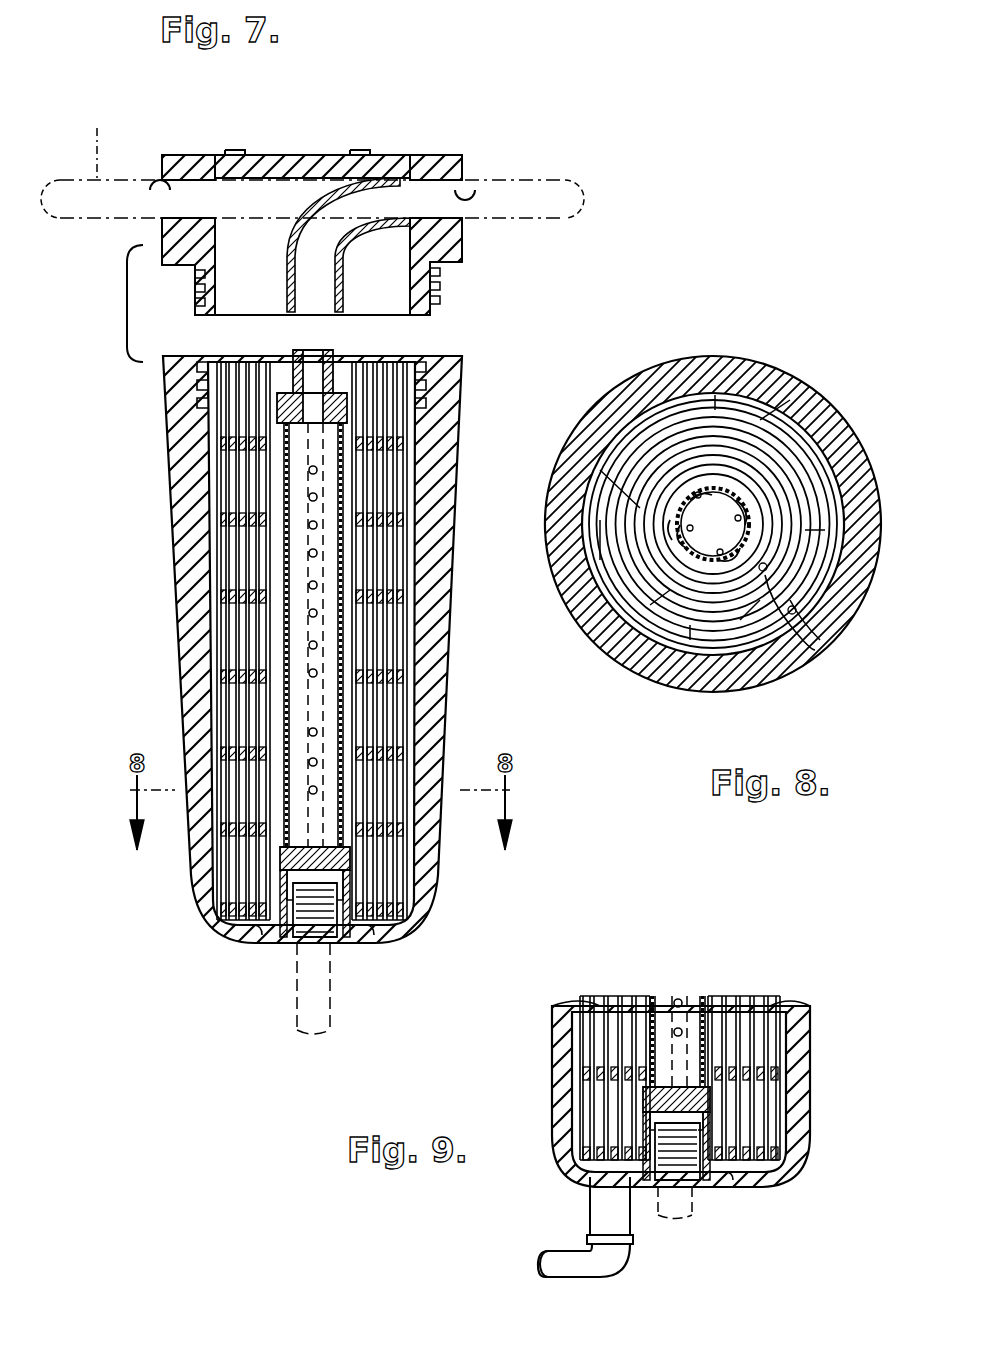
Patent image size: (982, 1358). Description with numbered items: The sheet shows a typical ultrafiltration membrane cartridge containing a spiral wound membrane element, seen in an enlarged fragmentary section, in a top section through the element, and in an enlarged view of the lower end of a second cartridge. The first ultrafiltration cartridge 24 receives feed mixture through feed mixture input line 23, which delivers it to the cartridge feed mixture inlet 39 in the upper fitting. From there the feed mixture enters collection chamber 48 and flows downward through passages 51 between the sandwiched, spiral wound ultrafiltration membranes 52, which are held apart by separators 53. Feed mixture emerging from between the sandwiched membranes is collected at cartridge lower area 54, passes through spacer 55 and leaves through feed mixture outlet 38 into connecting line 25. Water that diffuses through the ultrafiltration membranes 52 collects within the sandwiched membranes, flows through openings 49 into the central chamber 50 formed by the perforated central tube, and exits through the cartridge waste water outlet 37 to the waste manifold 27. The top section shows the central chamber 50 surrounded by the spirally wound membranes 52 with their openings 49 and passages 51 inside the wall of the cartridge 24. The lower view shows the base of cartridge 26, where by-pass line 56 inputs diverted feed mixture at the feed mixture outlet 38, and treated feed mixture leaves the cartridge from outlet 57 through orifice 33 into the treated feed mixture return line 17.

In FIG. 9, the treated feed mixture return line 17 is at (565, 1250).
In FIG. 7, the feed mixture input line 23 is at (106, 235).
In FIG. 7, the first ultrafiltration cartridge 24 is at (180, 598).
In FIG. 8, the first ultrafiltration cartridge 24 is at (735, 356).
In FIG. 7, the connecting line 25 is at (330, 1000).
In FIG. 9, the cartridge 26 is at (552, 1050).
In FIG. 7, the waste manifold 27 is at (540, 180).
In FIG. 9, the orifice 33 is at (585, 1212).
In FIG. 7, the cartridge waste water outlet 37 is at (470, 180).
In FIG. 7, the feed mixture outlet 38 is at (315, 958).
In FIG. 7, the cartridge feed mixture inlet 39 is at (160, 182).
In FIG. 8, the collection chamber 48 is at (670, 410).
In FIG. 9, the collection chamber 48 is at (775, 1000).
In FIG. 7, the openings 49 is at (310, 474).
In FIG. 8, the openings 49 is at (740, 510).
In FIG. 9, the openings 49 is at (676, 1000).
In FIG. 7, the central chamber 50 is at (344, 493).
In FIG. 8, the central chamber 50 is at (708, 524).
In FIG. 9, the central chamber 50 is at (676, 1088).
In FIG. 7, the passages 51 is at (372, 566).
In FIG. 8, the passages 51 is at (830, 665).
In FIG. 7, the ultrafiltration membranes 52 is at (400, 628).
In FIG. 8, the ultrafiltration membranes 52 is at (822, 444).
In FIG. 7, the separators 53 is at (400, 688).
In FIG. 7, the cartridge lower area 54 is at (372, 945).
In FIG. 9, the cartridge lower area 54 is at (735, 1185).
In FIG. 7, the spacer 55 is at (258, 940).
In FIG. 9, the by-pass line 56 is at (692, 1218).
In FIG. 9, the outlet 57 is at (580, 1182).